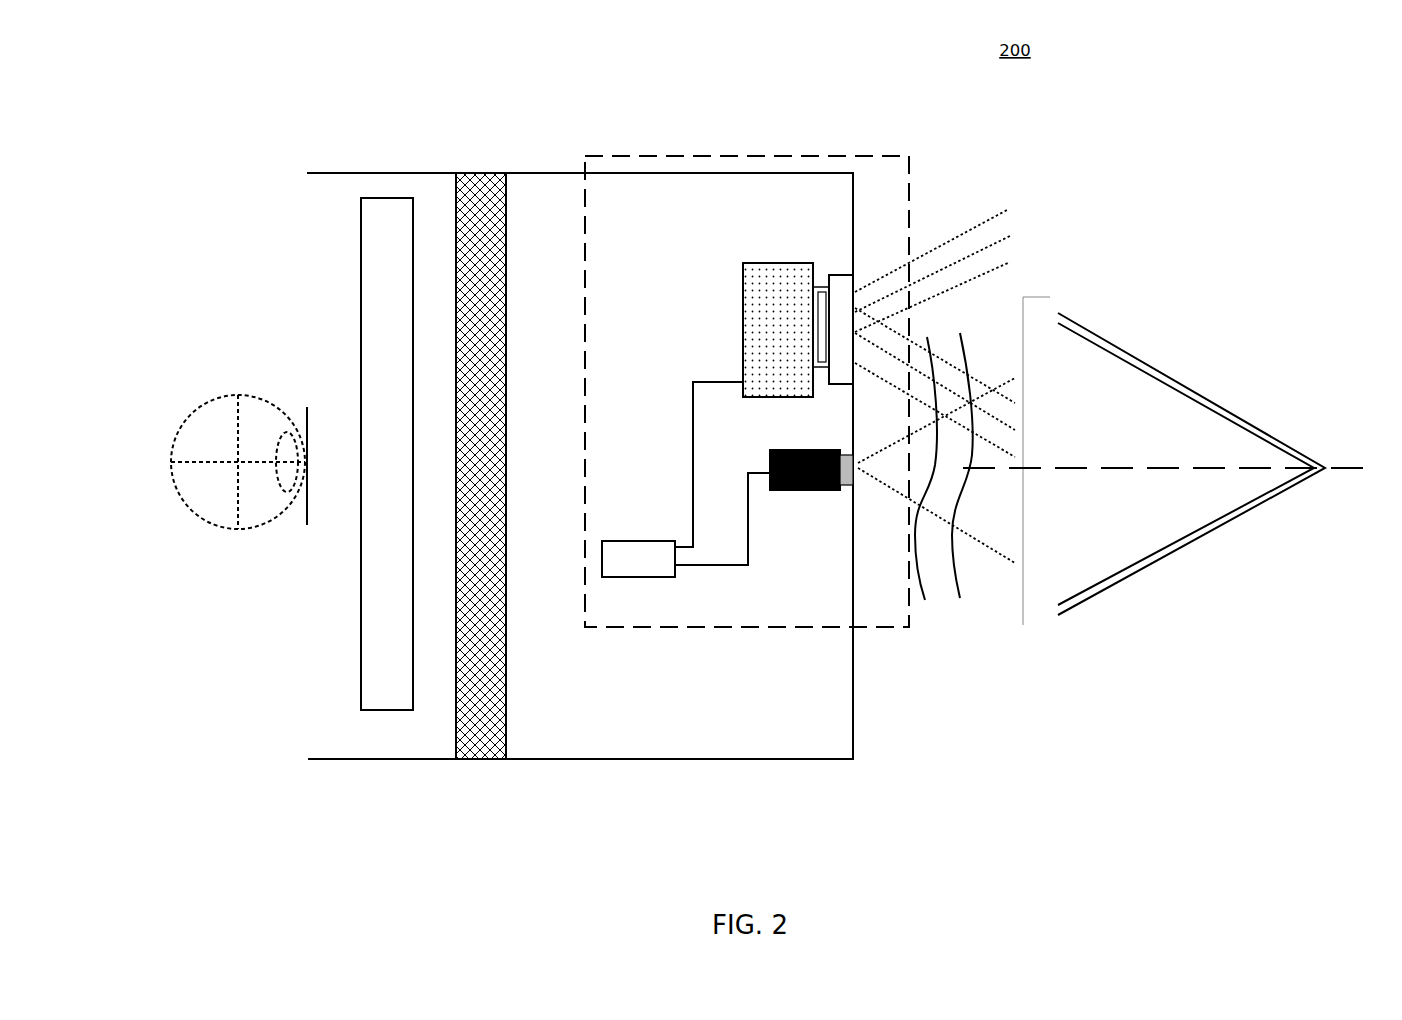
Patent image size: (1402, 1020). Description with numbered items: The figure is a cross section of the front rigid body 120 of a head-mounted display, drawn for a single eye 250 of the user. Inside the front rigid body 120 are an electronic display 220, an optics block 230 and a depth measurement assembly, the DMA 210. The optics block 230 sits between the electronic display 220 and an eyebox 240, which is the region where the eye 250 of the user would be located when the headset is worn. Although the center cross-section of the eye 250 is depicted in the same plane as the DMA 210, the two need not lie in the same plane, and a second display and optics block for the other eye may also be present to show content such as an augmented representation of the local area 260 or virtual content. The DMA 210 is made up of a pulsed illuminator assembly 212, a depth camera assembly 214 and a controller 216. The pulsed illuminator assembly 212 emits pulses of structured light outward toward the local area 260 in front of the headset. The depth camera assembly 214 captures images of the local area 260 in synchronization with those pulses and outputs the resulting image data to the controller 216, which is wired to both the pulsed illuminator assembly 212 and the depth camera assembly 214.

The front rigid body 120 is at (813, 759).
The DMA 210 is at (617, 156).
The pulsed illuminator assembly 212 is at (778, 263).
The depth camera assembly 214 is at (808, 492).
The controller 216 is at (612, 577).
The electronic display 220 is at (456, 224).
The optics block 230 is at (402, 712).
The eyebox 240 is at (305, 407).
The eye 250 is at (203, 518).
The local area 260 is at (1170, 560).